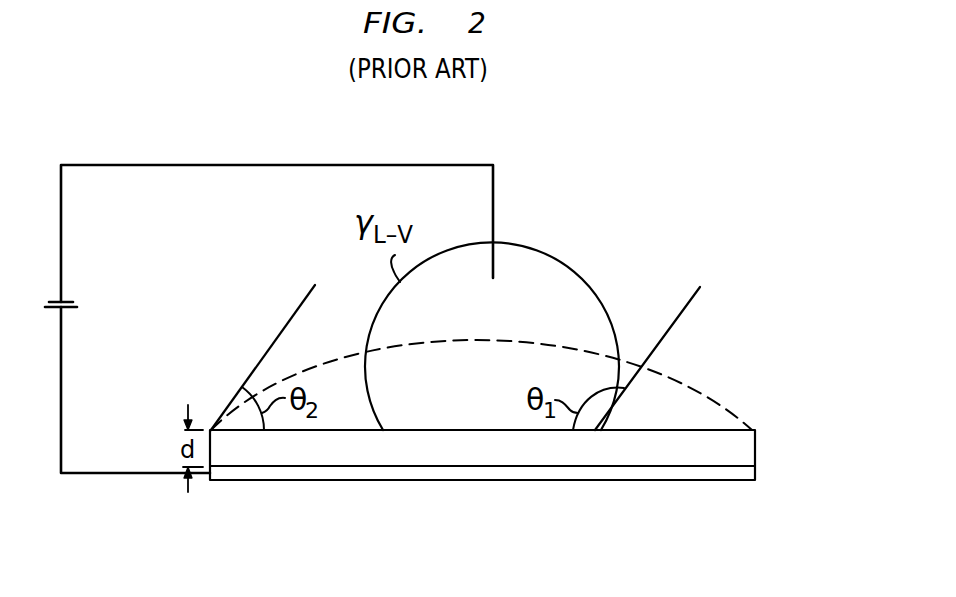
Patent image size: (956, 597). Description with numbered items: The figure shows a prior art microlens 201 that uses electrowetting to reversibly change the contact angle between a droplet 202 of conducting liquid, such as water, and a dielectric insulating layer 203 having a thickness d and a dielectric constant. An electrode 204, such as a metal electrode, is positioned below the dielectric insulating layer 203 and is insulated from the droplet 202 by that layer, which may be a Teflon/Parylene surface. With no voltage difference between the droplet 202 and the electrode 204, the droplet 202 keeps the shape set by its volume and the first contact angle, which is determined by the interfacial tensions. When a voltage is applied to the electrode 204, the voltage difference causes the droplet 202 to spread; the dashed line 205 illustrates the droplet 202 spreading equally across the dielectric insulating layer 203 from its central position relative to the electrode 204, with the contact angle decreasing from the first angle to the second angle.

The microlens 201 is at (157, 275).
The droplet 202 is at (570, 262).
The dielectric insulating layer 203 is at (758, 448).
The electrode 204 is at (337, 482).
The dashed line 205 is at (702, 388).